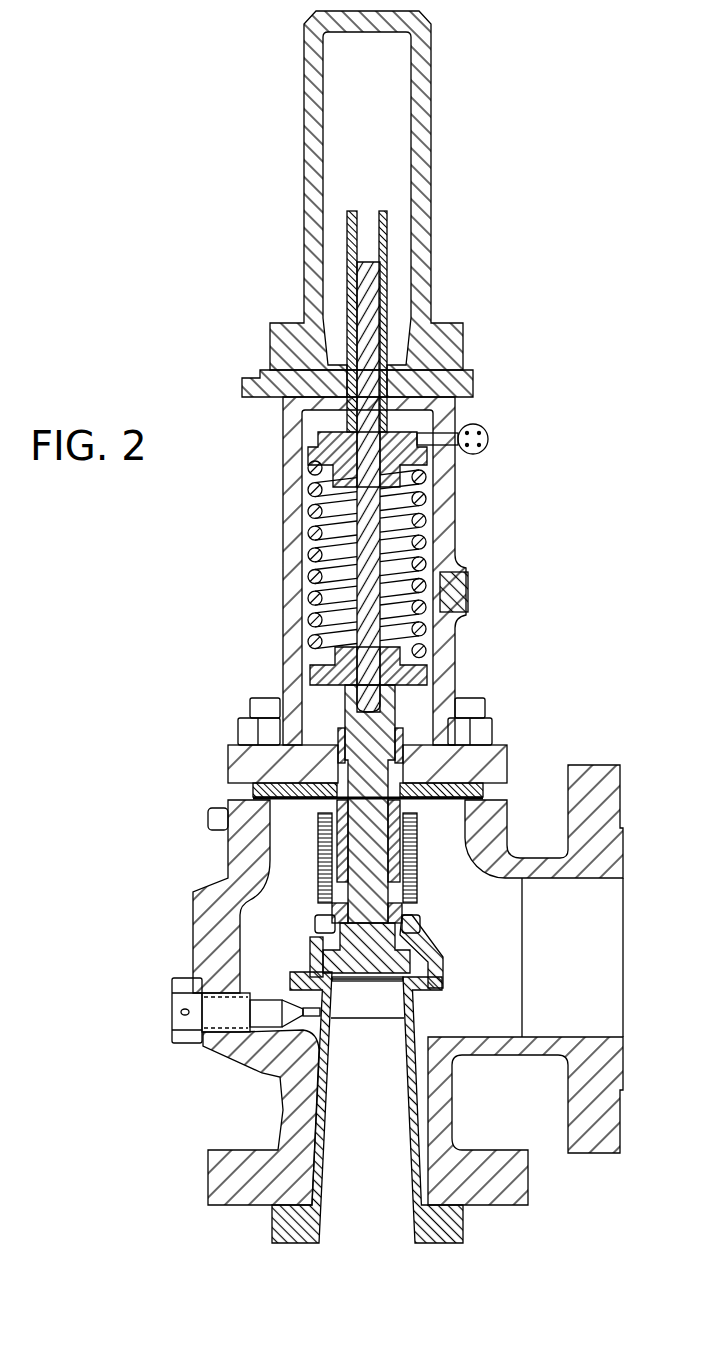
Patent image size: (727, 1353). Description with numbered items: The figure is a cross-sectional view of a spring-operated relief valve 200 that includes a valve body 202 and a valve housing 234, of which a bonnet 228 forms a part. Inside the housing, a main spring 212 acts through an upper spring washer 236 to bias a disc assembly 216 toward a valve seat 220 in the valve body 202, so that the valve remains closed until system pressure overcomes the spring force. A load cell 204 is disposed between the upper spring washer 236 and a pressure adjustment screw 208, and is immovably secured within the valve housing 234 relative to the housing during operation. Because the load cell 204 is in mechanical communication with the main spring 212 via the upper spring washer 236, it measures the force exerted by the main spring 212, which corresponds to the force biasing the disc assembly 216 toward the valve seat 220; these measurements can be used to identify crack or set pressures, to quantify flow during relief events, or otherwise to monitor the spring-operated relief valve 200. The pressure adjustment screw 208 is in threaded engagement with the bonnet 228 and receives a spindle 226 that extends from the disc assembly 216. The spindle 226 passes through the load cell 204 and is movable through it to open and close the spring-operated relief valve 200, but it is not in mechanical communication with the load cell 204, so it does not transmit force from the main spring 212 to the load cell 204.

The spring-operated relief valve 200 is at (248, 95).
The valve body 202 is at (204, 883).
The load cell 204 is at (318, 437).
The pressure adjustment screw 208 is at (352, 230).
The main spring 212 is at (315, 533).
The disc assembly 216 is at (452, 948).
The valve seat 220 is at (312, 970).
The spindle 226 is at (368, 675).
The bonnet 228 is at (290, 498).
The valve housing 234 is at (502, 304).
The upper spring washer 236 is at (428, 453).